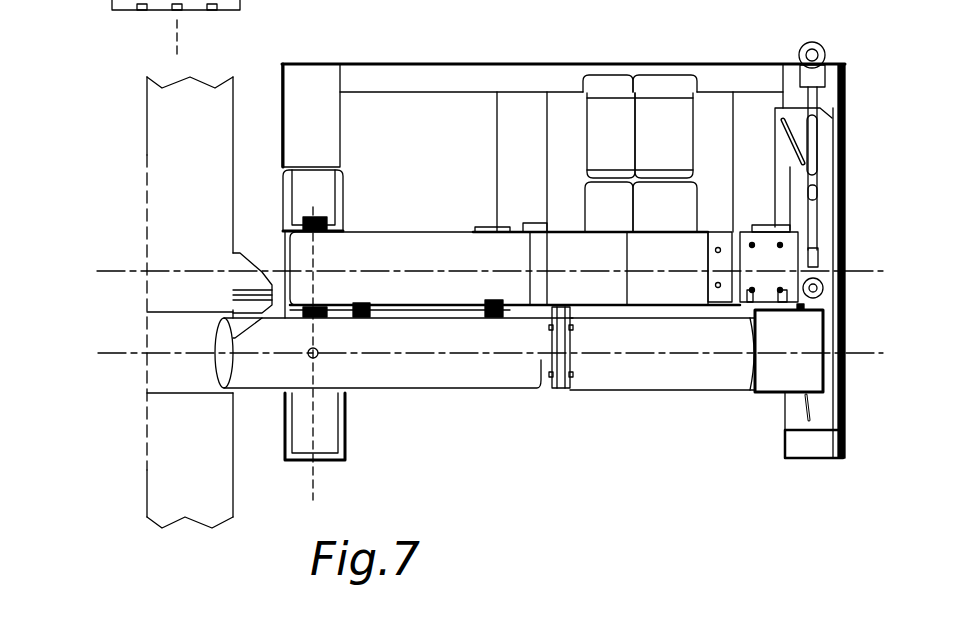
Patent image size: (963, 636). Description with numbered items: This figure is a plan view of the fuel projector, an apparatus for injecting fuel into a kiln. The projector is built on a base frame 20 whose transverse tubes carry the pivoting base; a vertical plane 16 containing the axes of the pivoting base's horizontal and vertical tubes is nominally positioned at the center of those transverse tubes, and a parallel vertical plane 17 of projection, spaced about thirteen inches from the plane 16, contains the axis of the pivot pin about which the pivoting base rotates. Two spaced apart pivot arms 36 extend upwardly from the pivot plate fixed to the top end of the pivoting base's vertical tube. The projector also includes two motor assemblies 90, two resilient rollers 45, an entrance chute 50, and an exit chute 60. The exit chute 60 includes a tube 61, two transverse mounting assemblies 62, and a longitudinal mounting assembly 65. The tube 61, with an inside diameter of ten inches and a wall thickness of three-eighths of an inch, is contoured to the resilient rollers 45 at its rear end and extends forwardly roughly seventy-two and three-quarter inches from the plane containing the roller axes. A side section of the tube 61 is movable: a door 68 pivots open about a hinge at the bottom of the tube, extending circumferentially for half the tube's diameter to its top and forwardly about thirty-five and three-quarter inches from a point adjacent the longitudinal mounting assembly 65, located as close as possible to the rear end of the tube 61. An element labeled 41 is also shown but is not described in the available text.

The vertical plane 16 is at (110, 270).
The vertical plane of projection 17 is at (110, 355).
The base frame 20 is at (456, 58).
The pivot arms 36 is at (298, 218).
The support beam 41 is at (380, 235).
The rollers 45 is at (682, 388).
The entrance chute 50 is at (832, 329).
The exit chute 60 is at (253, 400).
The tube 61 is at (270, 393).
The transverse mounting assemblies 62 is at (357, 317).
The longitudinal mounting assembly 65 is at (551, 388).
The door 68 is at (420, 389).
The motor assemblies 90 is at (697, 112).